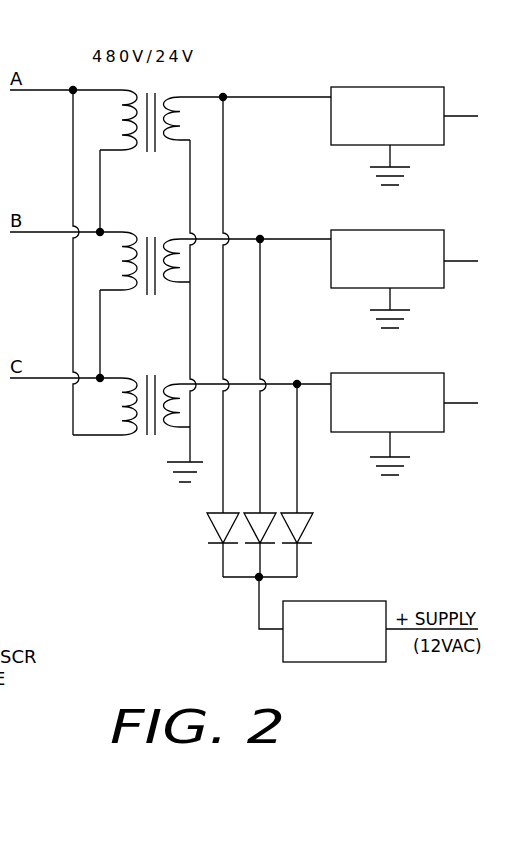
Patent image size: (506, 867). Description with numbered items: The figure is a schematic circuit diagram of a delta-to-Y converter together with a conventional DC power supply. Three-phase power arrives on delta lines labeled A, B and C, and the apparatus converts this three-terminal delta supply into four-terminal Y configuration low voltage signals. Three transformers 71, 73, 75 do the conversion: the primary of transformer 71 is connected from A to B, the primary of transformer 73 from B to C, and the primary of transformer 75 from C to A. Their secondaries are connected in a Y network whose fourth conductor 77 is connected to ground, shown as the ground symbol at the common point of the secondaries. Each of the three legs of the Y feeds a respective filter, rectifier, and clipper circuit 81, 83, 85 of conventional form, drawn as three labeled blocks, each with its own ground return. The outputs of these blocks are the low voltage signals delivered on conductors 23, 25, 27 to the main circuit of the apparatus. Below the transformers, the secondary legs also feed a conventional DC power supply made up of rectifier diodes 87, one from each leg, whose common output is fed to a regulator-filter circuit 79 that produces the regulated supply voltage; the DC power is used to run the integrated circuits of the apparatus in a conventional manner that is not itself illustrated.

The transformer 71 is at (137, 159).
The transformer 73 is at (133, 302).
The transformer 75 is at (130, 442).
The fourth conductor 77 is at (192, 484).
The regulator-filter circuit 79 is at (329, 664).
The filter, rectifier, and clipper circuit 81 is at (331, 122).
The filter, rectifier, and clipper circuit 83 is at (331, 277).
The filter, rectifier, and clipper circuit 85 is at (330, 430).
The rectifier diodes 87 is at (220, 495).
The conductor 23 is at (466, 122).
The conductor 25 is at (466, 266).
The conductor 27 is at (466, 408).